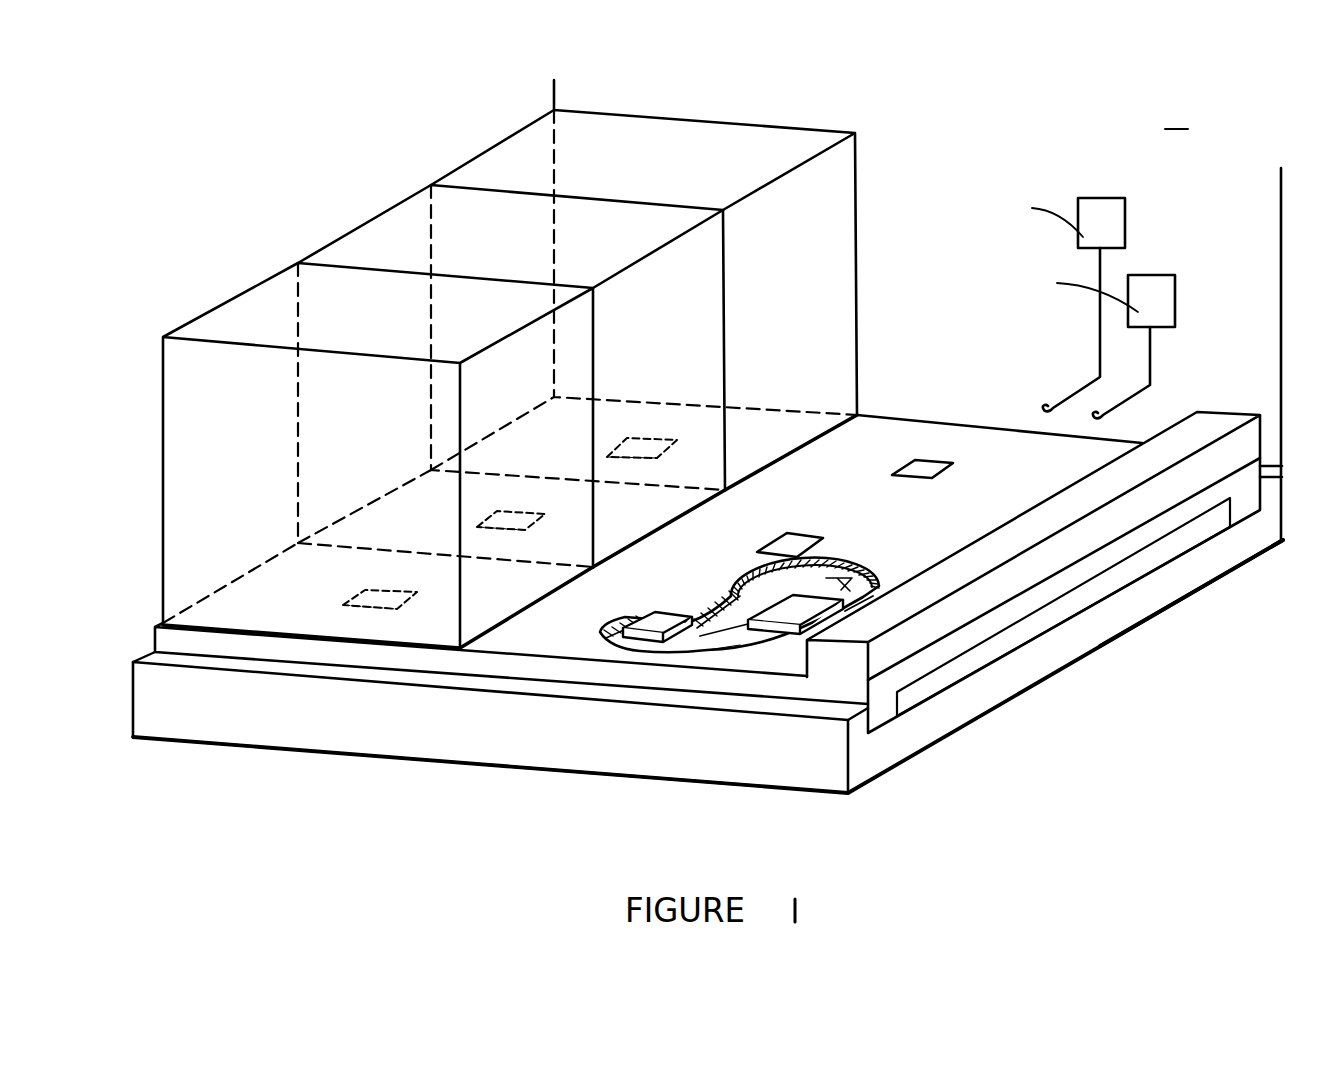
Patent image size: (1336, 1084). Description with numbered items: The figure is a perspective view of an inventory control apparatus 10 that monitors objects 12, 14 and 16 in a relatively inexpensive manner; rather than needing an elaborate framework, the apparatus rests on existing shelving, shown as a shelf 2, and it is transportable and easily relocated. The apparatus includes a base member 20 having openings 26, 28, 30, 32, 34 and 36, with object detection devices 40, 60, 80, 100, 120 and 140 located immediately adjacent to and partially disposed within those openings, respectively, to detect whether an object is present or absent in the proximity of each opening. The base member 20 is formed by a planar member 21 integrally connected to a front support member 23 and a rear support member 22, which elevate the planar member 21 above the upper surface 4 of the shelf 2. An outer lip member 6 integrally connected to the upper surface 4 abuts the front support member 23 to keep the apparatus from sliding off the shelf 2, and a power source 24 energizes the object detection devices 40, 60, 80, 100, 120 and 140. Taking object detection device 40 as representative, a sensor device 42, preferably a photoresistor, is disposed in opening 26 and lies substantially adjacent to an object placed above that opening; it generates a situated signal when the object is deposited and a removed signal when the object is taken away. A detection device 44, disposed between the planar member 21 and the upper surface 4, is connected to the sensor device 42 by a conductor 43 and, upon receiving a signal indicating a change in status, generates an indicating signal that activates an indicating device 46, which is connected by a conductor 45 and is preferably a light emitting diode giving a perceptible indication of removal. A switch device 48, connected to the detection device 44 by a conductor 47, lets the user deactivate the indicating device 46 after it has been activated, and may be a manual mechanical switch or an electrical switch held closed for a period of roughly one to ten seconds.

The shelf 2 is at (1128, 734).
The upper surface 4 is at (975, 662).
The outer lip member 6 is at (856, 737).
The inventory control apparatus 10 is at (1155, 188).
The object 12 is at (245, 310).
The object 14 is at (378, 242).
The object 16 is at (513, 158).
The base member 20 is at (1205, 603).
The planar member 21 is at (987, 428).
The rear support member 22 is at (1245, 508).
The front support member 23 is at (885, 715).
The power source 24 is at (1220, 422).
The opening 26 is at (673, 606).
The opening 28 is at (763, 536).
The opening 30 is at (890, 466).
The opening 32 is at (410, 606).
The opening 34 is at (545, 527).
The opening 36 is at (677, 452).
The object detection device 40 is at (677, 660).
The sensor device 42 is at (657, 615).
The conductor 43 is at (730, 635).
The detection device 44 is at (787, 607).
The conductor 45 is at (1080, 387).
The indicating device 46 is at (1090, 200).
The conductor 47 is at (1135, 393).
The switch device 48 is at (1153, 283).
The object detection device 60 is at (823, 549).
The object detection device 80 is at (955, 470).
The object detection device 100 is at (338, 593).
The object detection device 120 is at (473, 515).
The object detection device 140 is at (605, 441).